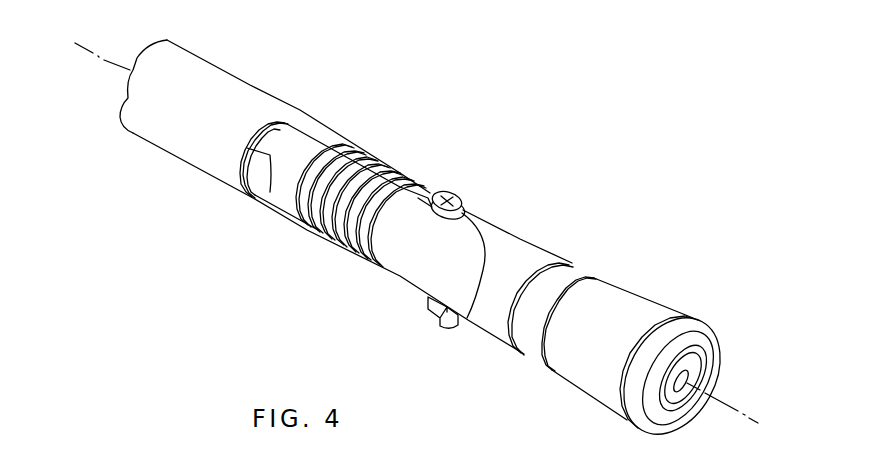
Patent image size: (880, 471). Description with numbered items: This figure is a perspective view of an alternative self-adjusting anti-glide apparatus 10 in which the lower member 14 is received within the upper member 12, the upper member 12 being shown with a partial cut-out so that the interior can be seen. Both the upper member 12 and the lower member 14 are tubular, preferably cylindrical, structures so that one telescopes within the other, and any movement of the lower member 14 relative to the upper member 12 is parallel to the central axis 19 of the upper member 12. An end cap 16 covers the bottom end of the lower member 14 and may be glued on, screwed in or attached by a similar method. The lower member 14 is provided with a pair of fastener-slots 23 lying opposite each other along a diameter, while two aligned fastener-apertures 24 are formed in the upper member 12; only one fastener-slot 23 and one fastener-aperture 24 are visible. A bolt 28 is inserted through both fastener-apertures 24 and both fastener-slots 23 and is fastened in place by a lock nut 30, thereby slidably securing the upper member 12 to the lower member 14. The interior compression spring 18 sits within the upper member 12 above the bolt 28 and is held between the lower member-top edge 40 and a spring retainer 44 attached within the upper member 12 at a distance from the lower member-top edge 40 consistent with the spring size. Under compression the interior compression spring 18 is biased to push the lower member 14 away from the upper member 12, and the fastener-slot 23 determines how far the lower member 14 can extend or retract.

The anti-glide apparatus 10 is at (448, 58).
The upper member 12 is at (243, 97).
The lower member 14 is at (568, 283).
The end cap 16 is at (590, 370).
The interior compression spring 18 is at (357, 250).
The central axis 19 is at (713, 398).
The fastener-slot 23 is at (424, 197).
The fastener-aperture 24 is at (466, 208).
The bolt 28 is at (449, 193).
The lock nut 30 is at (428, 305).
The lower member-top edge 40 is at (373, 253).
The spring retainer 44 is at (292, 200).